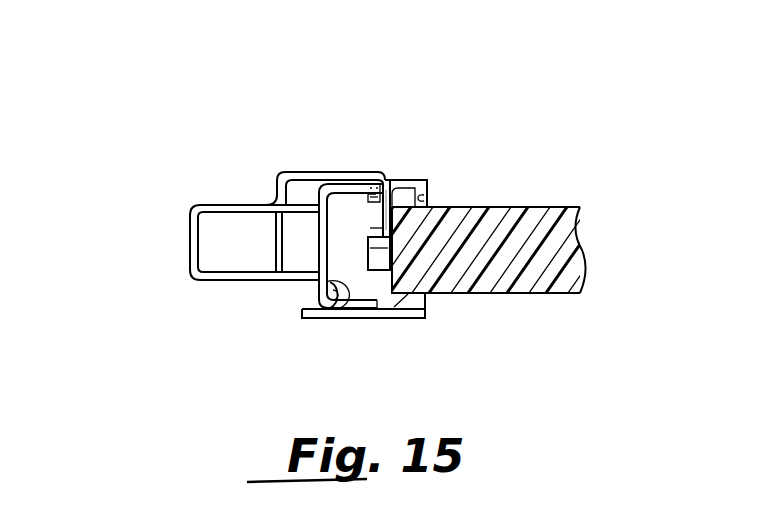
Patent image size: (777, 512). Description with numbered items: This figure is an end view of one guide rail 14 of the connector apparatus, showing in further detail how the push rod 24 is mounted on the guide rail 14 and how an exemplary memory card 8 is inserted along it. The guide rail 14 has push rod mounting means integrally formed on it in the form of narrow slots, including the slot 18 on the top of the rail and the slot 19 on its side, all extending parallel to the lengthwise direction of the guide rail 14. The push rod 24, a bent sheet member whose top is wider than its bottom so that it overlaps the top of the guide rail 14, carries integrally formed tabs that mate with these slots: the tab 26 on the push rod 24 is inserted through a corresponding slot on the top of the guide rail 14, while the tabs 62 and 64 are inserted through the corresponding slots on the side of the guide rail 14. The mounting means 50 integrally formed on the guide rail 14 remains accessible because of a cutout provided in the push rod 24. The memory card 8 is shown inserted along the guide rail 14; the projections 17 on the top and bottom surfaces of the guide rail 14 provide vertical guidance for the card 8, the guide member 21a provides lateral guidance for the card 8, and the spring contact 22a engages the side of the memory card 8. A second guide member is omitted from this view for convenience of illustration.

The memory card 8 is at (567, 247).
The guide rail 14 is at (361, 318).
The projections 17 is at (430, 194).
The slot 18 is at (385, 178).
The slot 19 is at (313, 283).
The guide member 21a is at (383, 224).
The spring contact 22a is at (380, 250).
The push rod 24 is at (174, 280).
The tab 26 is at (367, 195).
The mounting means 50 is at (322, 320).
The tab 62 is at (347, 320).
The tab 64 is at (335, 295).